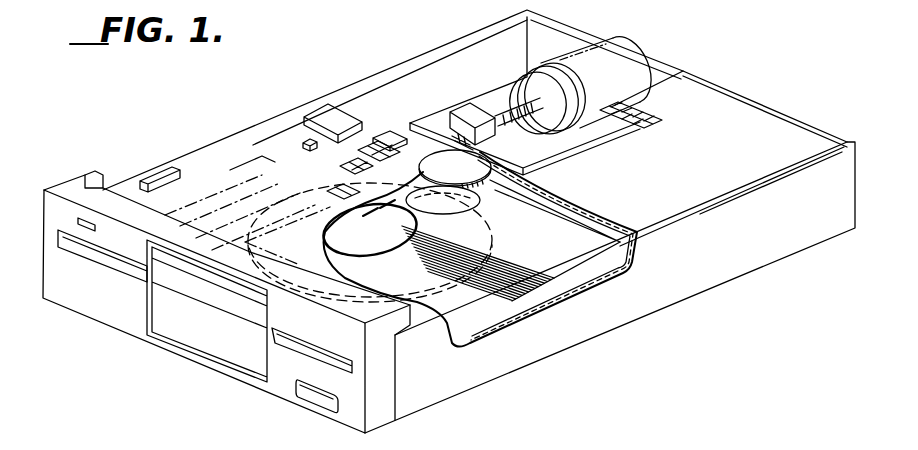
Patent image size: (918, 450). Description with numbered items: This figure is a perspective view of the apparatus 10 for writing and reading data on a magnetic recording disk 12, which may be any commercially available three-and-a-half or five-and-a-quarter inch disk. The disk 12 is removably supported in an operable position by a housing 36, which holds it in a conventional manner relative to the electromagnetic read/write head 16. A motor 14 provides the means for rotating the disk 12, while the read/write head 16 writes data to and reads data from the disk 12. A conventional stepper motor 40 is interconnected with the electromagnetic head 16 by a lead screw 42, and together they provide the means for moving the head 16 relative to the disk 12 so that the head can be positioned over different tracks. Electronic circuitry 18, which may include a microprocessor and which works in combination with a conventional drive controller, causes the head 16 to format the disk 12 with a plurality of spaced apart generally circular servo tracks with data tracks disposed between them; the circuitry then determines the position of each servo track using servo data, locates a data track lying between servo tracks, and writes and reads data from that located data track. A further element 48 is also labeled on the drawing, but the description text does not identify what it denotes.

The disk drive housing 10 is at (700, 61).
The flexible cable 12 is at (566, 243).
The disk 14 is at (470, 233).
The spindle hub 16 is at (442, 182).
The circuit board 18 is at (252, 140).
The front bezel 36 is at (379, 416).
The stepper motor 40 is at (585, 55).
The lead screw 42 is at (516, 112).
The housing base 48 is at (682, 447).